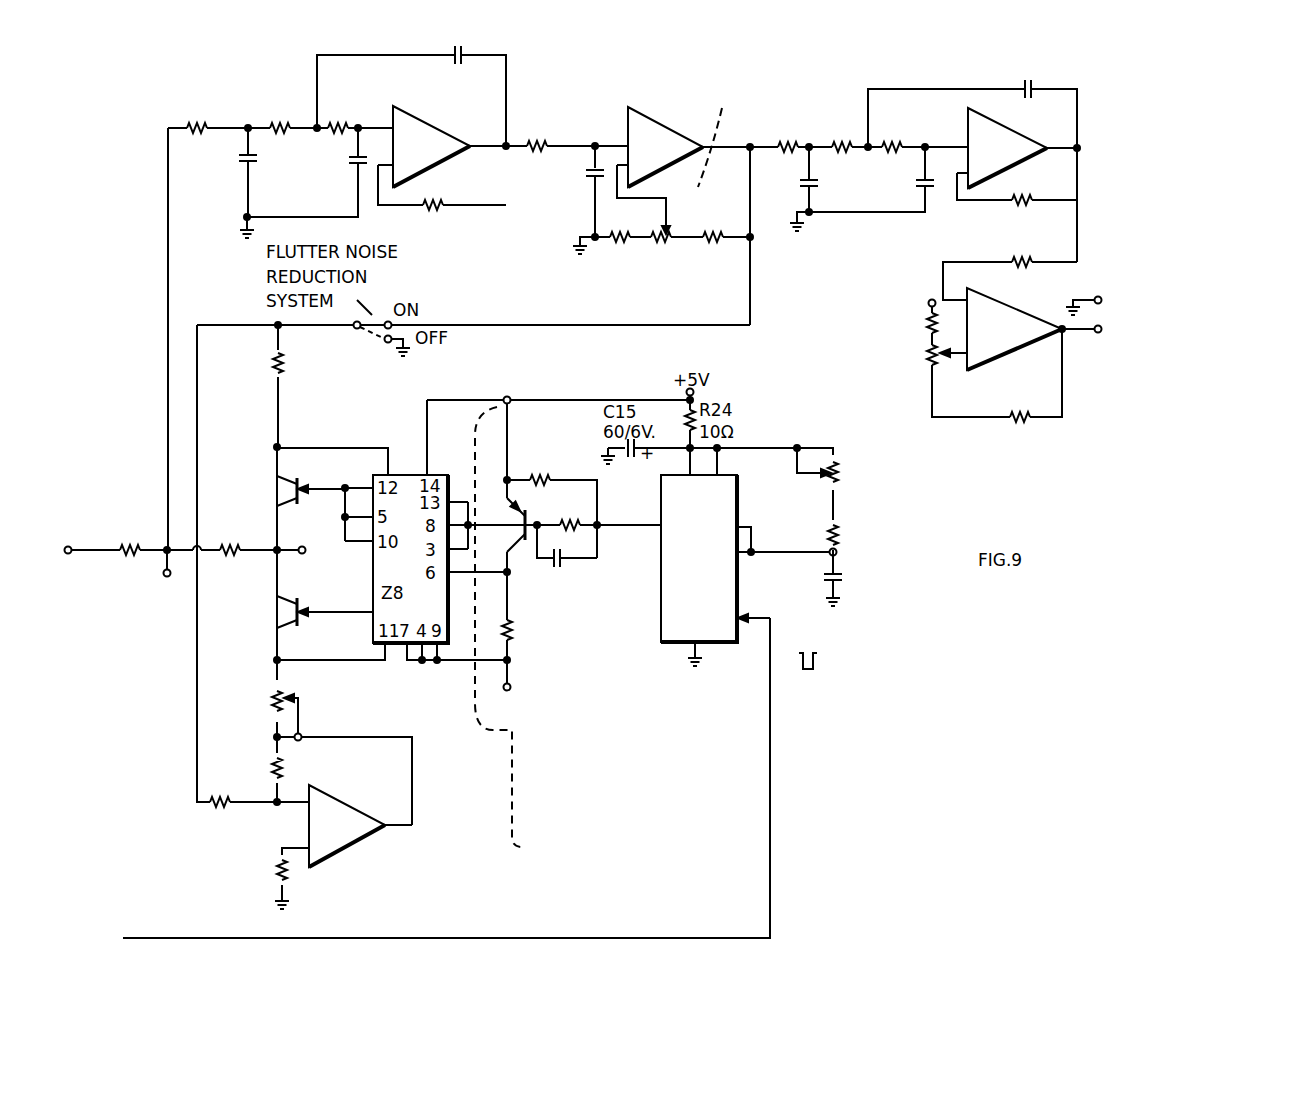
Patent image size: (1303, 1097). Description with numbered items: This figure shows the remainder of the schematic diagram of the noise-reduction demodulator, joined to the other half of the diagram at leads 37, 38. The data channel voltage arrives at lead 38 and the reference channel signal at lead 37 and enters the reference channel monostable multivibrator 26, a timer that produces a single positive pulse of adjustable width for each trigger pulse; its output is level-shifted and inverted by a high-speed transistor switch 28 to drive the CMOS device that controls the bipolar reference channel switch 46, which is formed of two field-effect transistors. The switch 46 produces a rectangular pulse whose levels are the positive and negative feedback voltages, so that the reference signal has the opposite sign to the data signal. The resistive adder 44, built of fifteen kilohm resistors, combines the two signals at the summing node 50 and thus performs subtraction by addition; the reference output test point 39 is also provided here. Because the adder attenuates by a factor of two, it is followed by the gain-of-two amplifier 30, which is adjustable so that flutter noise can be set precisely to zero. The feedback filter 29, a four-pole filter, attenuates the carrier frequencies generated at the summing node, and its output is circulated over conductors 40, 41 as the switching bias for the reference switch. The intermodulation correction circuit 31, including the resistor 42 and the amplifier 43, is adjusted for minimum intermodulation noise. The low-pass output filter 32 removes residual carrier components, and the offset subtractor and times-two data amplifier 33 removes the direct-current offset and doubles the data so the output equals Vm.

The monostable multivibrator 26 is at (873, 732).
The high-speed transistor switch 28 is at (600, 399).
The feedback filter 29 is at (597, 48).
The gain-of-2 amplifier 30 is at (747, 48).
The intermodulation correction circuit 31 is at (177, 905).
The low-pass output filter 32 is at (1090, 48).
The offset subtractor and X2 data amplifier 33 is at (1072, 440).
The lead 37 is at (774, 722).
The lead 38 is at (108, 555).
The reference input terminal 39 is at (256, 556).
The conductor 40 is at (166, 274).
The conductor 41 is at (704, 326).
The resistor 42 is at (270, 348).
The operational amplifier 43 is at (412, 772).
The resistive adder 44 is at (258, 505).
The bipolar reference channel switch 46 is at (288, 486).
The summing node 50 is at (163, 556).